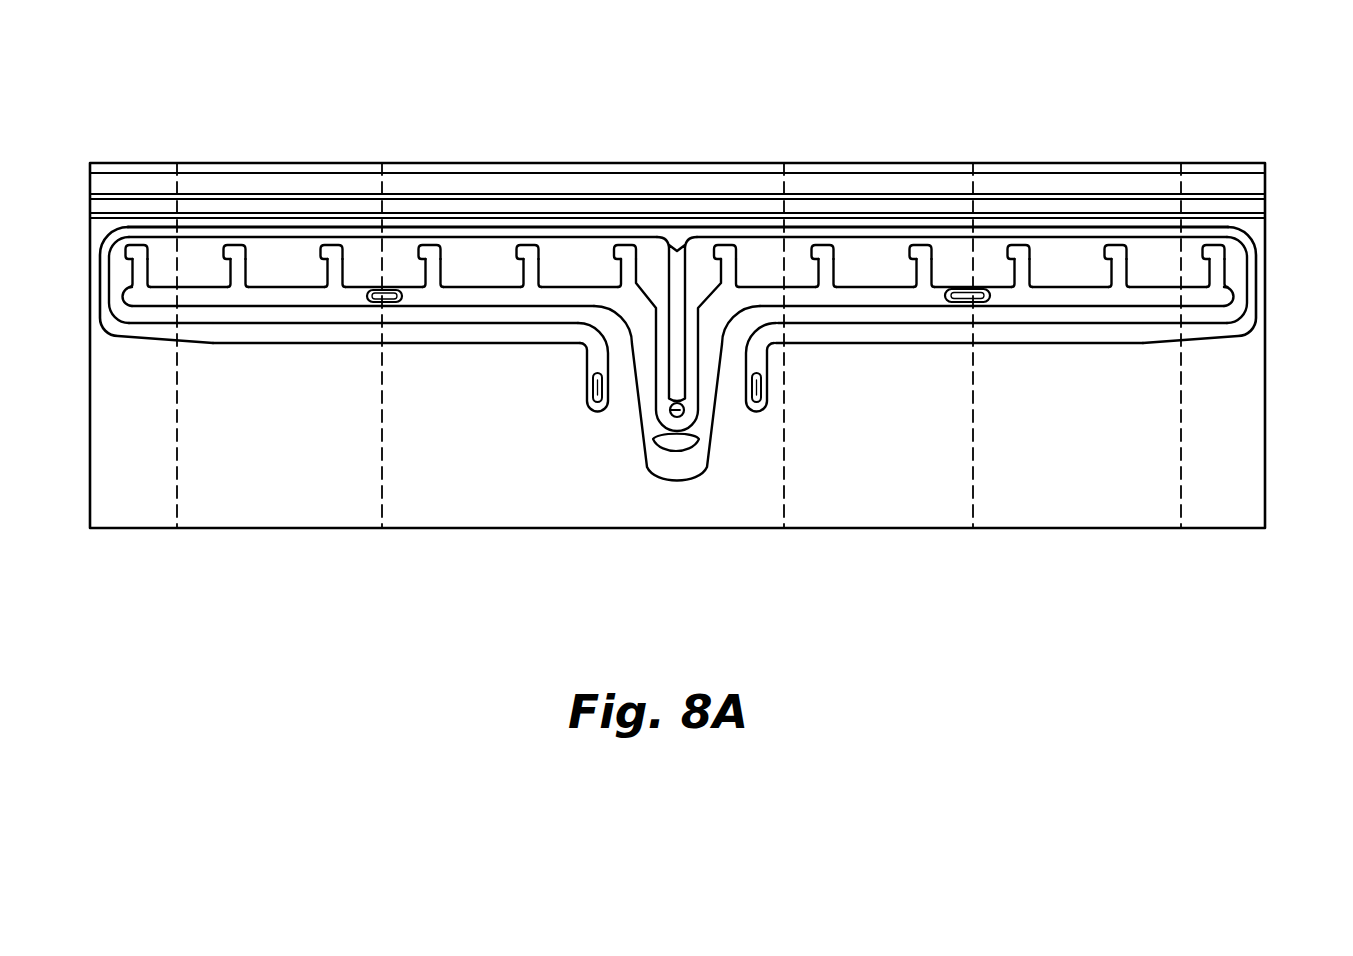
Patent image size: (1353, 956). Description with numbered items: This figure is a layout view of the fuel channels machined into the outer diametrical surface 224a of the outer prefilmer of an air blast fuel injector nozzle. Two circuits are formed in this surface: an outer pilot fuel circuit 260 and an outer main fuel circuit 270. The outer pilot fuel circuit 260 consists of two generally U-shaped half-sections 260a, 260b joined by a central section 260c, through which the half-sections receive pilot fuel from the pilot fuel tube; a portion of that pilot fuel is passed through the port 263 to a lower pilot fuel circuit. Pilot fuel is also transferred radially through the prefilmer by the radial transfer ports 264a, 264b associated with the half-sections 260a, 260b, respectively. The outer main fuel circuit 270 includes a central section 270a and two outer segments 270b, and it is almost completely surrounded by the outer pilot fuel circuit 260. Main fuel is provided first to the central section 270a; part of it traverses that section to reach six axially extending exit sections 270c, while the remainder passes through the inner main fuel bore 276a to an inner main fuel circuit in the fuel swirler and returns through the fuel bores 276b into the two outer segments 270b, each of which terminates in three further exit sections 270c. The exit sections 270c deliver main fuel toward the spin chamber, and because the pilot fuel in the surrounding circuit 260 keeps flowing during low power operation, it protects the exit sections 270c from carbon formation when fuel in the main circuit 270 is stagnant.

The outer diametrical surface 224a is at (1107, 488).
The outer pilot fuel circuit 260 is at (1262, 288).
The outer pilot fuel circuit half-section 260a is at (102, 265).
The outer pilot fuel circuit half-section 260b is at (1255, 247).
The central section 260c is at (678, 300).
The outer main fuel circuit 270 is at (270, 296).
The central section 270a is at (686, 470).
The outer segment 270b is at (198, 292).
The axially extending exit section 270c is at (131, 247).
The port 263 is at (672, 412).
The inner main fuel bore 276a is at (678, 448).
The fuel bore 276b is at (385, 295).
The radial transfer port 264a is at (594, 392).
The radial transfer port 264b is at (760, 390).